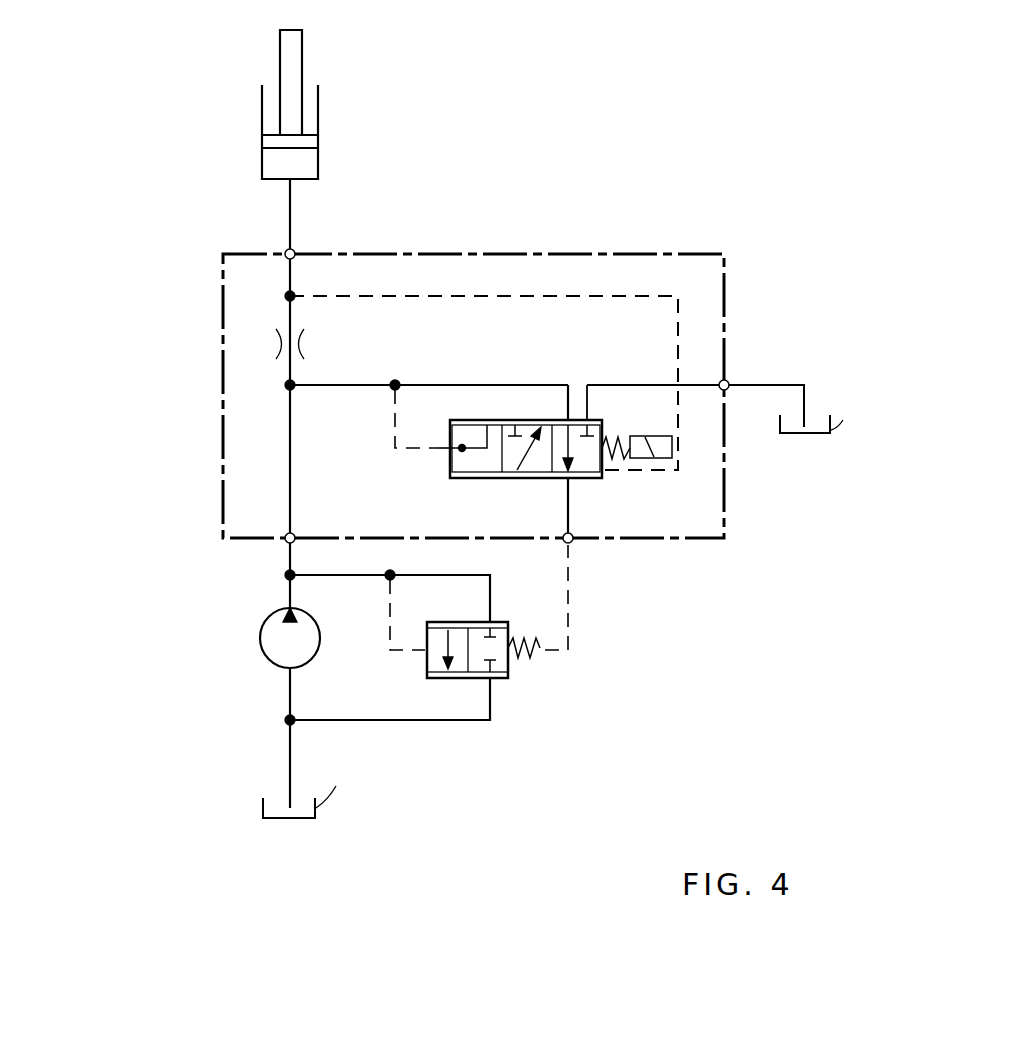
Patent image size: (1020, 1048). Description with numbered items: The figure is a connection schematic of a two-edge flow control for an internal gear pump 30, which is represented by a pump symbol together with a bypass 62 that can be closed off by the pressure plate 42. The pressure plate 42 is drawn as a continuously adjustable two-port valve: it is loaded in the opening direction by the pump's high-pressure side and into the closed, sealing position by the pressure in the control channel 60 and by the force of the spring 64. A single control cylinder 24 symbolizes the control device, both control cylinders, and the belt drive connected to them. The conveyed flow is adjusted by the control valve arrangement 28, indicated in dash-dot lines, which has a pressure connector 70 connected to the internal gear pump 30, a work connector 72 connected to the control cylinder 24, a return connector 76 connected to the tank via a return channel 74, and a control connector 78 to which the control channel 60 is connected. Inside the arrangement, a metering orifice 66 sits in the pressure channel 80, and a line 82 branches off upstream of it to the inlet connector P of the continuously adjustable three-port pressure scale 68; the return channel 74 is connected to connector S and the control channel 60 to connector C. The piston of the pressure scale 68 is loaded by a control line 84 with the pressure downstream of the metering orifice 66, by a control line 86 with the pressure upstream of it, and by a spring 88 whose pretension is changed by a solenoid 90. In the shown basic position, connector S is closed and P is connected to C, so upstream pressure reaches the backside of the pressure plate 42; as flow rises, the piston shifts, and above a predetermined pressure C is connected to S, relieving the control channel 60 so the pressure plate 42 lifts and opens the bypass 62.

The control cylinder 24 is at (319, 94).
The control valve arrangement 28 is at (665, 253).
The internal gear pump 30 is at (278, 655).
The pressure plate 42 is at (508, 640).
The control channel 60 is at (568, 610).
The bypass 62 is at (420, 721).
The spring 64 is at (540, 660).
The metering orifice 66 is at (278, 353).
The pressure scale 68 is at (602, 478).
The pressure connector 70 is at (288, 541).
The work connector 72 is at (285, 251).
The return channel 74 is at (788, 381).
The return connector 76 is at (727, 383).
The control connector 78 is at (575, 545).
The pressure channel 80 is at (290, 460).
The line 82 is at (481, 385).
The control line 84 is at (678, 300).
The control line 86 is at (395, 430).
The spring 88 is at (620, 428).
The solenoid 90 is at (665, 445).